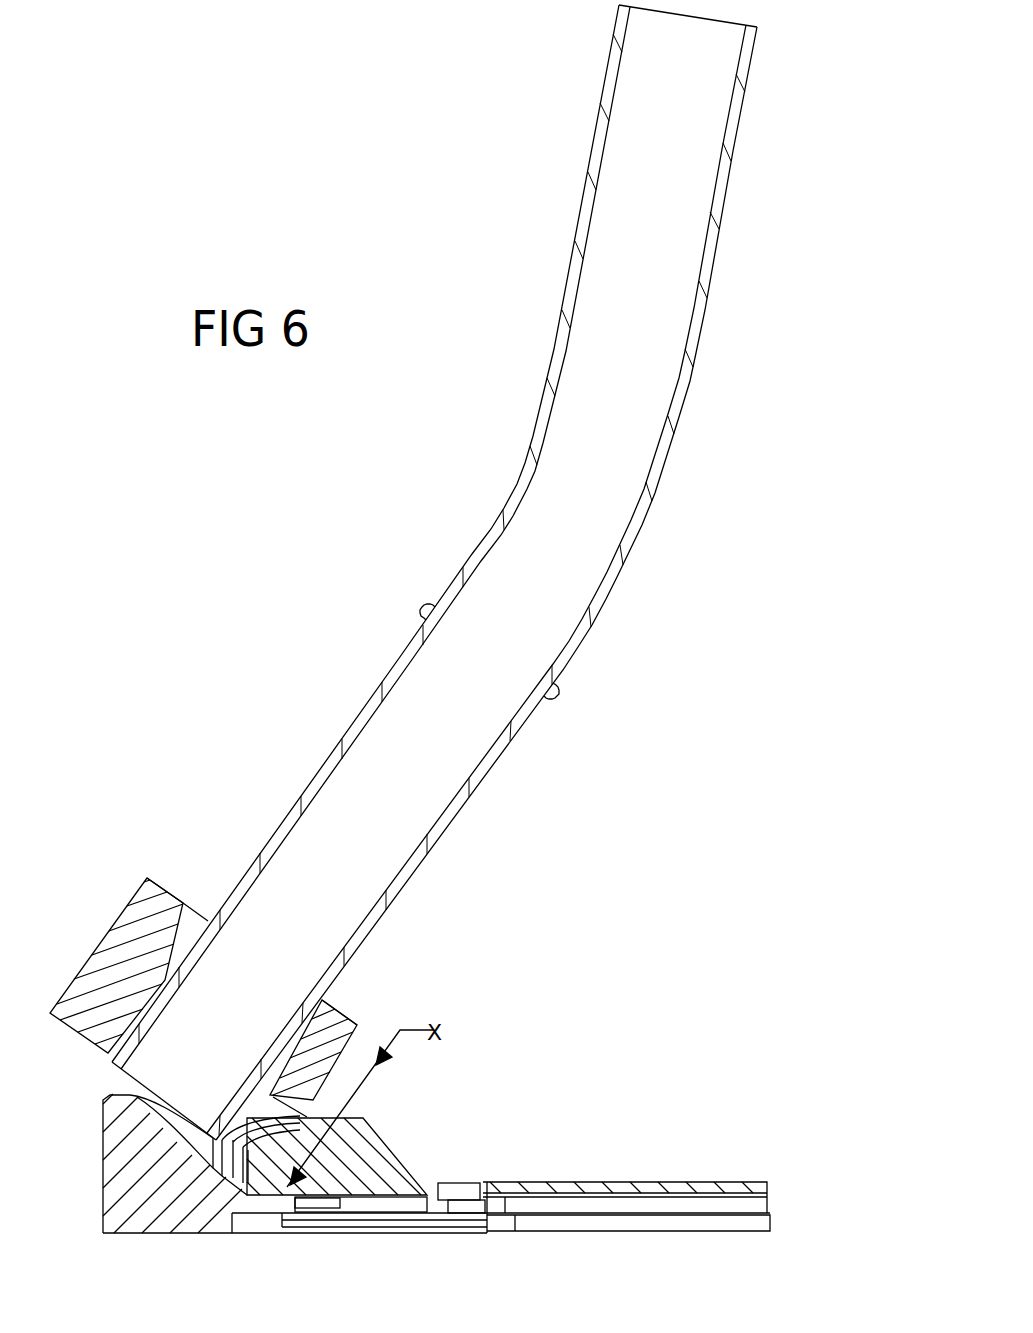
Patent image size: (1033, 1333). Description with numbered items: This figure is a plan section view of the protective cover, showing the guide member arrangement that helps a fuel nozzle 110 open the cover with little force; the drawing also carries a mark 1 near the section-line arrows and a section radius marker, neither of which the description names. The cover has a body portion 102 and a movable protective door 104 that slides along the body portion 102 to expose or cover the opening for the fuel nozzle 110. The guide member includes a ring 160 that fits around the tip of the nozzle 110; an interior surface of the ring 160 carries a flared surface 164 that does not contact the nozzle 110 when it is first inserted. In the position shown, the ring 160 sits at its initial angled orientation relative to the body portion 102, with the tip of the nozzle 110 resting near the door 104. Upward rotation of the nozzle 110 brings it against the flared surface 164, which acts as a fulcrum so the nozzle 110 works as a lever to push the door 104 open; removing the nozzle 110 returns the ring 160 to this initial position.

The fuel nozzle 110 is at (498, 757).
The ring 160 is at (133, 927).
The flared surface 164 is at (183, 903).
The second wedge 1 is at (330, 1093).
The body portion 102 is at (165, 1238).
The movable protective door 104 is at (400, 1177).